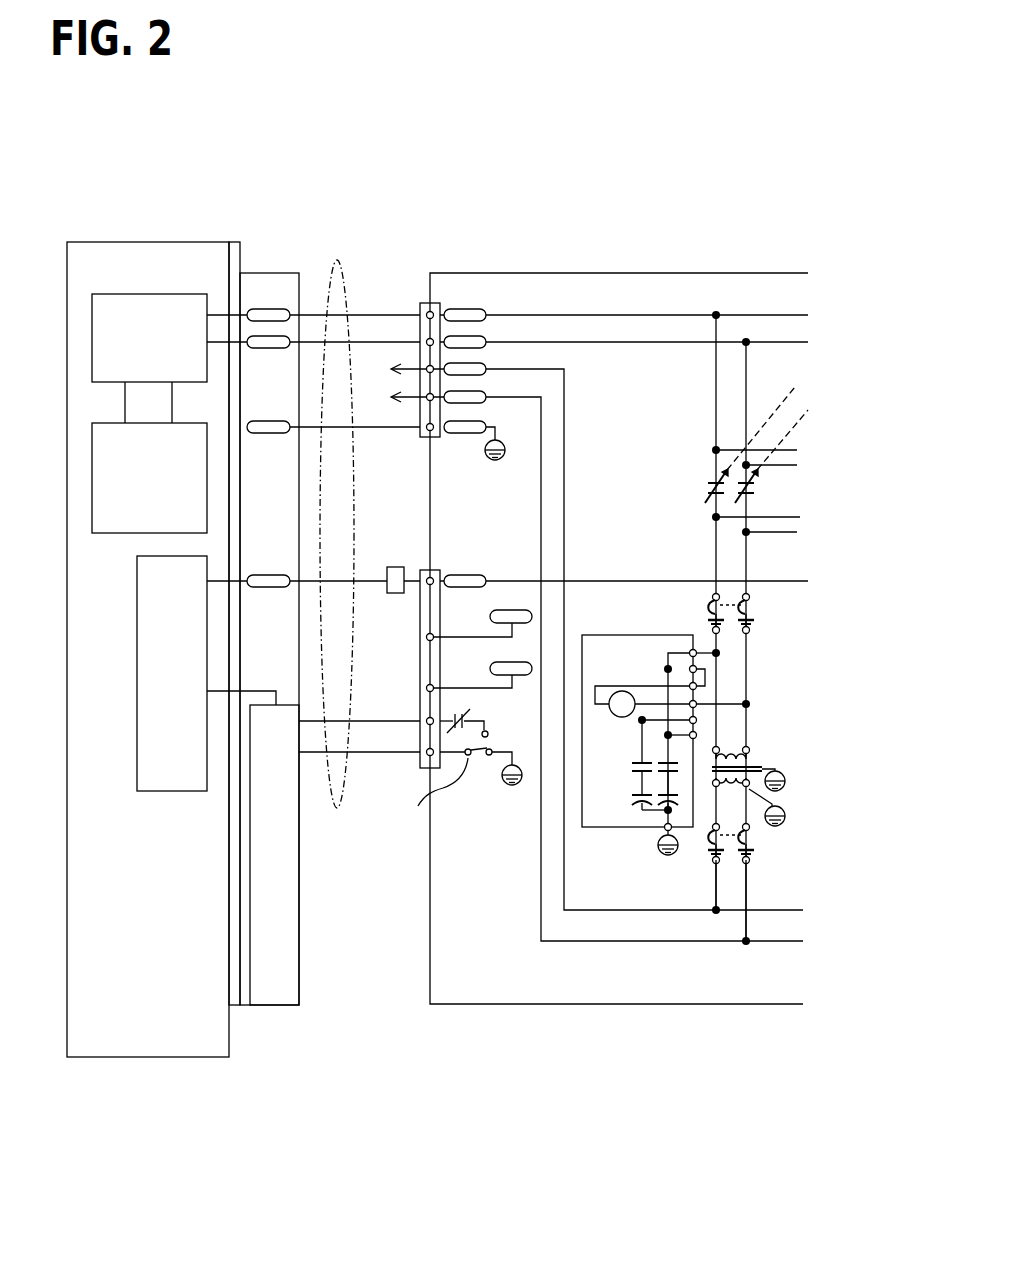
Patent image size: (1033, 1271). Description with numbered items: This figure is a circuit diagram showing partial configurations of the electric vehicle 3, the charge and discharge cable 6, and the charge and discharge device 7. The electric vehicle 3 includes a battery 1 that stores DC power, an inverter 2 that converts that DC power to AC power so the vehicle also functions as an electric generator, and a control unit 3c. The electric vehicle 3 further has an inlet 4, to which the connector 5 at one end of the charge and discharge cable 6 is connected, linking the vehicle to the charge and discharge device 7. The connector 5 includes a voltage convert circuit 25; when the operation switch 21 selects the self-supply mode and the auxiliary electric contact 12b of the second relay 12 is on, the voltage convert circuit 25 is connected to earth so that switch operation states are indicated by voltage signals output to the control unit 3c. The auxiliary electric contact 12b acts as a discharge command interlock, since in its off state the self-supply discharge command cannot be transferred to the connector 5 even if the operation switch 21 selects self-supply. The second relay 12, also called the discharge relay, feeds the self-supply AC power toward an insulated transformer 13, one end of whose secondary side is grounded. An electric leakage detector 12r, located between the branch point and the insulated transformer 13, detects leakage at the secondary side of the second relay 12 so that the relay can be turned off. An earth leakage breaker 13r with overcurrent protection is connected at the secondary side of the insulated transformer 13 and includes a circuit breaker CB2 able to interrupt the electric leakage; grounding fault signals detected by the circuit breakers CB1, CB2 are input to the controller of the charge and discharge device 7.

The battery 1 is at (92, 462).
The inverter 2 is at (92, 340).
The electric vehicle 3 is at (162, 242).
The control unit 3c is at (137, 635).
The inlet 4 is at (232, 242).
The connector 5 is at (278, 273).
The charge and discharge cable 6 is at (338, 260).
The charge and discharge device 7 is at (618, 270).
The second relay 12 is at (712, 481).
The auxiliary electric contact 12b is at (462, 715).
The electric leakage detector 12r is at (613, 811).
The insulated transformer 13 is at (751, 762).
The earth leakage breaker 13r is at (752, 833).
The operation switch 21 is at (489, 758).
The voltage convert circuit 25 is at (299, 903).
The circuit breaker CB1 is at (750, 611).
The circuit breaker CB2 is at (750, 845).